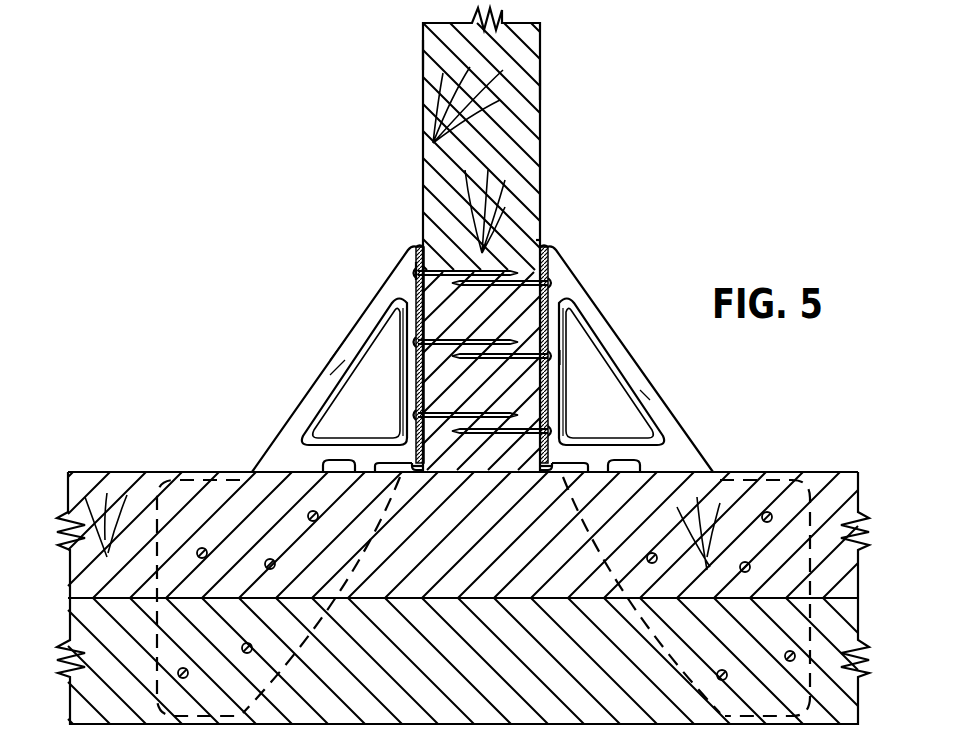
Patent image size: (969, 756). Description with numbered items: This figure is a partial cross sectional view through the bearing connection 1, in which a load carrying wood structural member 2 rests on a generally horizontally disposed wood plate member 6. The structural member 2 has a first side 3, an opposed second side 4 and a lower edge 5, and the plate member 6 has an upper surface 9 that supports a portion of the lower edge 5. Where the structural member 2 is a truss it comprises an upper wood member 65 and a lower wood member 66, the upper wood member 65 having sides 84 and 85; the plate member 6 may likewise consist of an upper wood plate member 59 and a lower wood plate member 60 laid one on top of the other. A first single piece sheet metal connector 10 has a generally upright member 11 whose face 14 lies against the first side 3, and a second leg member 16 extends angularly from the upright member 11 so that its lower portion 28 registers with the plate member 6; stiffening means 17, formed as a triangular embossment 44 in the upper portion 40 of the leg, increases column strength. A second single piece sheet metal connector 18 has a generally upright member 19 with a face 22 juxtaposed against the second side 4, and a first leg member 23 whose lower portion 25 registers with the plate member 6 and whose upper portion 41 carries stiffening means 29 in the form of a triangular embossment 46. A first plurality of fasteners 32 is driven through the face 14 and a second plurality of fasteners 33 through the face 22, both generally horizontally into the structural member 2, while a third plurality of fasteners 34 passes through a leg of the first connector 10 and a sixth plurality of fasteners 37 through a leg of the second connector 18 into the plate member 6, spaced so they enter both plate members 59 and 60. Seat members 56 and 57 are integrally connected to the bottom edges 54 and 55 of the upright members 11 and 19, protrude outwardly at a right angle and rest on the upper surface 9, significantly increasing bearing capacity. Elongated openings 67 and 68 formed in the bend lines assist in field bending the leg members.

The bearing connection 1 is at (680, 243).
The load carrying wood structural member 2 is at (415, 368).
The first side 3 is at (571, 290).
The second side 4 is at (413, 390).
The lower edge 5 is at (465, 474).
The wood plate member 6 is at (806, 467).
The upper surface 9 is at (767, 472).
The first single piece sheet metal connector 10 is at (649, 369).
The generally upright member 11 is at (556, 265).
The face 14 is at (545, 247).
The second leg member 16 is at (664, 394).
The stiffening means 17 is at (593, 305).
The second single piece sheet metal connector 18 is at (288, 421).
The generally upright member 19 is at (413, 250).
The face 22 is at (442, 318).
The first leg member 23 is at (340, 350).
The lower portion 25 is at (102, 675).
The lower portion 28 is at (827, 520).
The stiffening means 29 is at (333, 368).
The first plurality of fasteners 32 is at (561, 357).
The second plurality of fasteners 33 is at (410, 275).
The third plurality of fasteners 34 is at (657, 562).
The sixth plurality of fasteners 37 is at (247, 643).
The upper portion 40 is at (560, 275).
The upper portion 41 is at (404, 249).
The triangular embossment 44 is at (602, 323).
The triangular embossment 46 is at (337, 392).
The bottom edge 54 is at (541, 472).
The bottom edge 55 is at (420, 472).
The seat member 56 is at (582, 472).
The seat member 57 is at (392, 472).
The upper wood plate member 59 is at (87, 472).
The lower wood plate member 60 is at (92, 0).
The upper wood member 65 is at (517, 63).
The lower wood member 66 is at (505, 399).
The elongated opening 67 is at (642, 467).
The elongated opening 68 is at (325, 465).
The side 84 is at (540, 83).
The side 85 is at (423, 52).